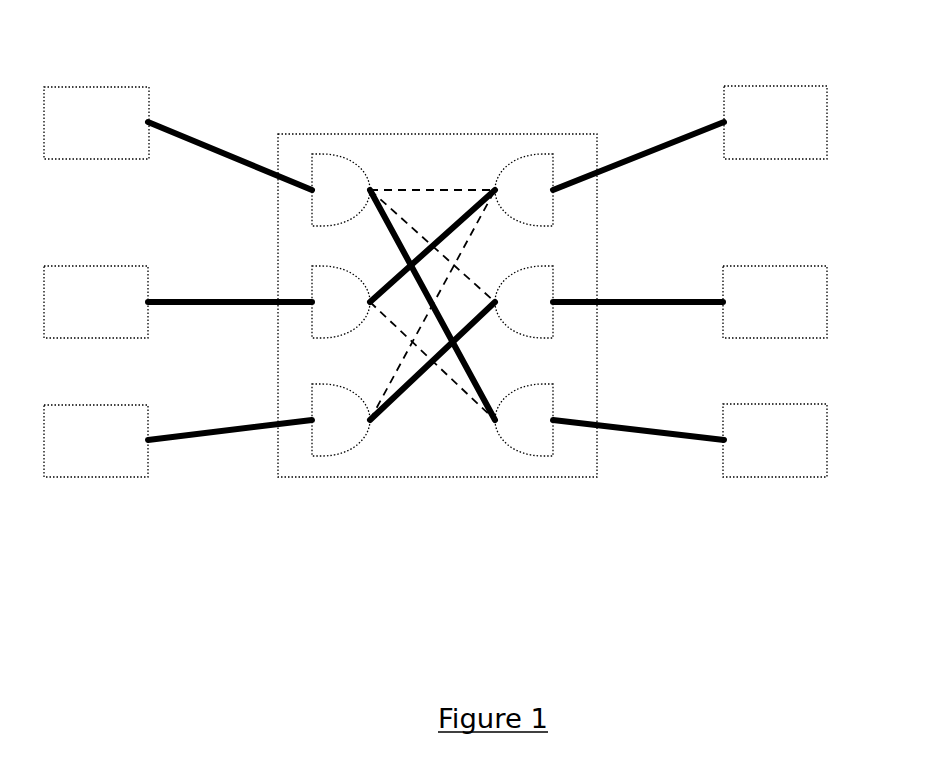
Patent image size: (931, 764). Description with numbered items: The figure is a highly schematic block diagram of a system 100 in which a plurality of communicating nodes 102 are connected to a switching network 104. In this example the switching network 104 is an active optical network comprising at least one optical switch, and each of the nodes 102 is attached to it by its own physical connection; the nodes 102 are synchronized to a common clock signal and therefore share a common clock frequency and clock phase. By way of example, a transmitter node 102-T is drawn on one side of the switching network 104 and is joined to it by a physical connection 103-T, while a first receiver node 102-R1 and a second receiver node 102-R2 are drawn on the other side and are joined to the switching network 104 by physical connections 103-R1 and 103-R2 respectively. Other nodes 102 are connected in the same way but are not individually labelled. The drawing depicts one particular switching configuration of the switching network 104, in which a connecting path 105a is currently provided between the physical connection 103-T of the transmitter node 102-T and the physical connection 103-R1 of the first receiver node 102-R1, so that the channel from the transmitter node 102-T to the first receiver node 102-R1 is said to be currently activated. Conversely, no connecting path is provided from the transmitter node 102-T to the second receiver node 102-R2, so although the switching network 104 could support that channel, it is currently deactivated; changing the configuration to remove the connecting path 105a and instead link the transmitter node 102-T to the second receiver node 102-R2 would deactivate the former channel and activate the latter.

The system 100 is at (195, 25).
The nodes 102 is at (145, 520).
The transmitter node 102-T is at (125, 311).
The first receiver node 102-R1 is at (810, 130).
The second receiver node 102-R2 is at (810, 449).
The physical connection 103-T is at (183, 300).
The physical connection 103-R1 is at (632, 162).
The physical connection 103-R2 is at (622, 430).
The switching network 104 is at (522, 135).
The connecting path 105a is at (460, 215).